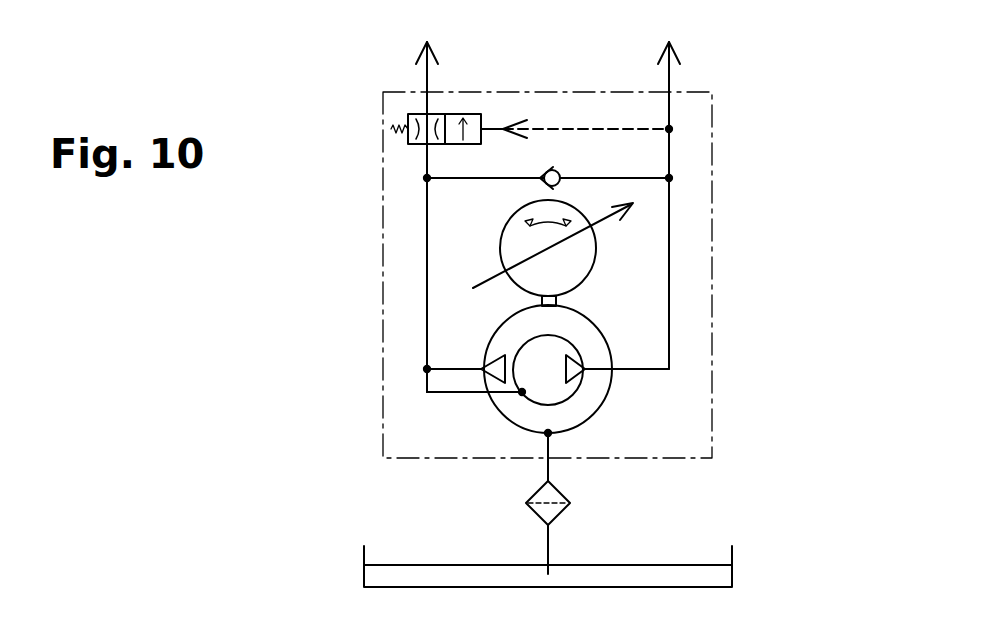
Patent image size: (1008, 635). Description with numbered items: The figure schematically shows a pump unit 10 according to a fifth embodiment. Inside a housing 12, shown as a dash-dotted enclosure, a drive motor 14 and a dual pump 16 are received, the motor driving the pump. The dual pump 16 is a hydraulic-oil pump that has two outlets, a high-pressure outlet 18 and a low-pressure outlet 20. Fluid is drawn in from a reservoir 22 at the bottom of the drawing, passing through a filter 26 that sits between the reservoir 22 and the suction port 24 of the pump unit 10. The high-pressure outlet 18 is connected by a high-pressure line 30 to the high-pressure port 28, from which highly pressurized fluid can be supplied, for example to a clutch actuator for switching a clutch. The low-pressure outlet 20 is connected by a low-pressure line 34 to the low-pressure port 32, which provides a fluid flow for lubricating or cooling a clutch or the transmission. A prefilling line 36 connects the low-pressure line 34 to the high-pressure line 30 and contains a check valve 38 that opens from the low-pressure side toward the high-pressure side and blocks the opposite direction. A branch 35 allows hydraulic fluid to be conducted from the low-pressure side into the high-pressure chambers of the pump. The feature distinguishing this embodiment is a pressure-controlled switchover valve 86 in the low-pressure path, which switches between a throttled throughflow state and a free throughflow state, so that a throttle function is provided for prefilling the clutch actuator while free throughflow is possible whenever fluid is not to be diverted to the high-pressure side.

The pump unit 10 is at (775, 72).
The housing 12 is at (712, 233).
The drive motor 14 is at (596, 258).
The dual pump 16 is at (594, 318).
The high-pressure outlet 18 is at (582, 370).
The low-pressure outlet 20 is at (480, 366).
The reservoir 22 is at (733, 553).
The suction port 24 is at (548, 458).
The filter 26 is at (536, 519).
The high-pressure port 28 is at (669, 92).
The high-pressure line 30 is at (670, 334).
The low-pressure port 32 is at (429, 92).
The low-pressure line 34 is at (427, 258).
The branch 35 is at (457, 393).
The prefilling line 36 is at (470, 178).
The check valve 38 is at (553, 168).
The pressure-controlled switchover valve 86 is at (482, 120).